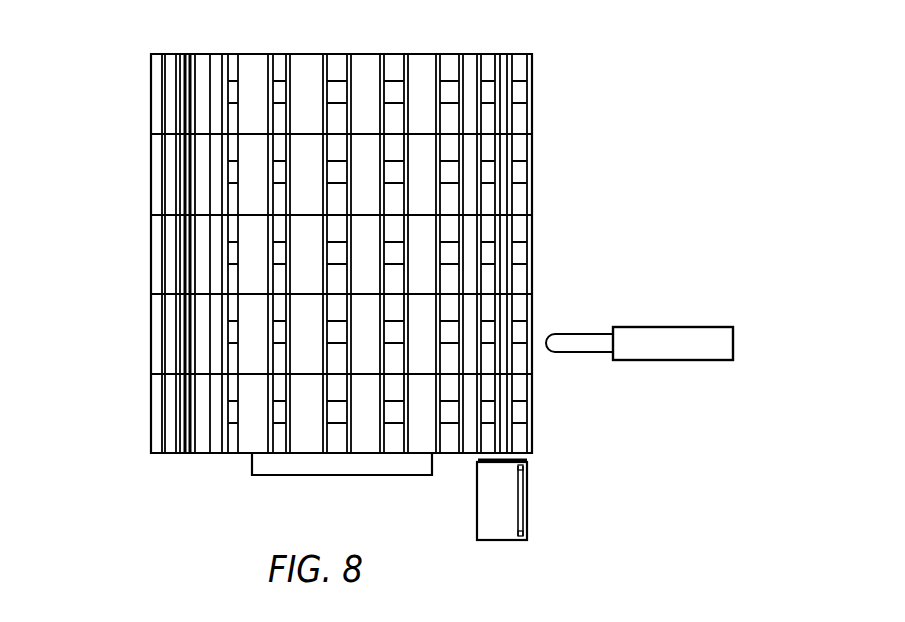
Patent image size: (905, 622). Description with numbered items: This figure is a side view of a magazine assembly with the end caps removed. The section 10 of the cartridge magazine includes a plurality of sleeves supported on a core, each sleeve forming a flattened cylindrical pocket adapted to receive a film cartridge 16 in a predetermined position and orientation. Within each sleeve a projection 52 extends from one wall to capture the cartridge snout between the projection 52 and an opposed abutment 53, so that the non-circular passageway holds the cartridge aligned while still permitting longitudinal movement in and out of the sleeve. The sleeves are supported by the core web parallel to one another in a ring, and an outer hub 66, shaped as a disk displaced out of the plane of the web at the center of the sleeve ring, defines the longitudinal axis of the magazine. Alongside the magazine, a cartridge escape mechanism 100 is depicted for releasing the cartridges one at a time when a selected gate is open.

The section of a cartridge magazine 10 is at (125, 128).
The projection 52 is at (397, 63).
The abutment 53 is at (385, 63).
The outer hub 66 is at (342, 478).
The film cartridge 16 is at (530, 498).
The cartridge escape mechanism 100 is at (663, 327).